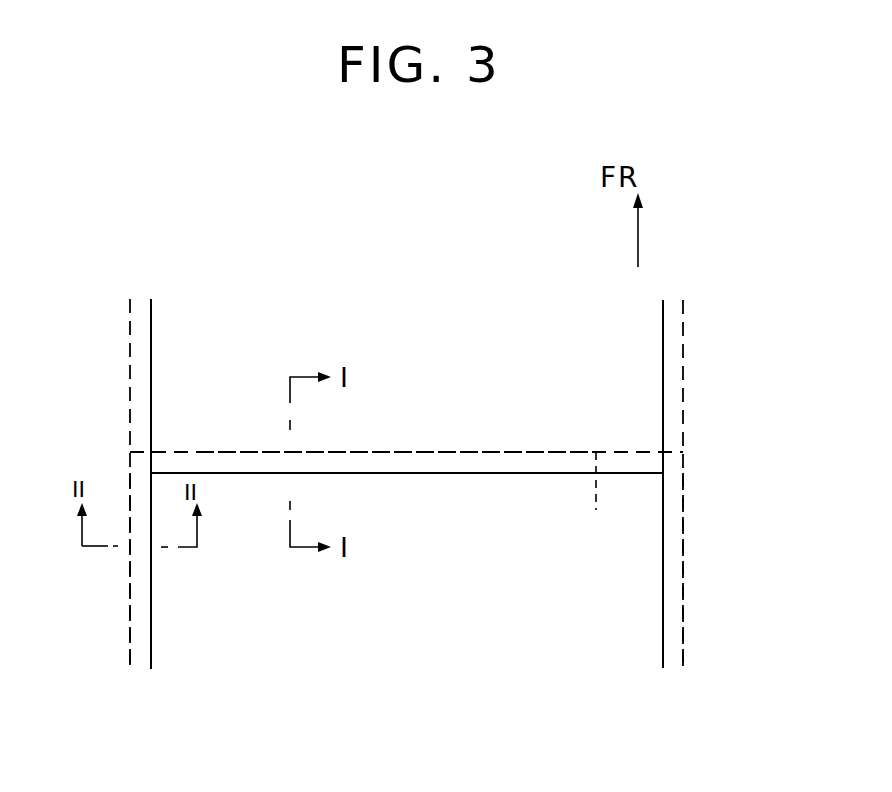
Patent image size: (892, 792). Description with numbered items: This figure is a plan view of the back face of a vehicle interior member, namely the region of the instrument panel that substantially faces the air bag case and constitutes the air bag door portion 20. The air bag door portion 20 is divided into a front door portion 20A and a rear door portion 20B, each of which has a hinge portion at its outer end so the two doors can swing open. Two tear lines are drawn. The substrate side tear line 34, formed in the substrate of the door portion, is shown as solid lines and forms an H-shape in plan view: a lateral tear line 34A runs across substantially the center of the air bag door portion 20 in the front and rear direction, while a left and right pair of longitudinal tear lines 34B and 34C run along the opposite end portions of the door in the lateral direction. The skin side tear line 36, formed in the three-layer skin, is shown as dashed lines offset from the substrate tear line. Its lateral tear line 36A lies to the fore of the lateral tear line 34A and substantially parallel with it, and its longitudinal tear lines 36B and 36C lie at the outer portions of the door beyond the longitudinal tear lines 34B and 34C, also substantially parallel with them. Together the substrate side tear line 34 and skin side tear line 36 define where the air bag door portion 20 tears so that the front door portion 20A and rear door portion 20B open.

The air bag door portion 20 is at (765, 388).
The front door portion 20A is at (642, 422).
The rear door portion 20B is at (642, 518).
The substrate side tear line 34 is at (427, 478).
The lateral tear line 34A is at (483, 476).
The longitudinal tear line 34B is at (663, 357).
The longitudinal tear line 34C is at (151, 356).
The skin side tear line 36 is at (571, 445).
The lateral tear line 36A is at (596, 470).
The longitudinal tear line 36B is at (683, 590).
The longitudinal tear line 36C is at (130, 590).